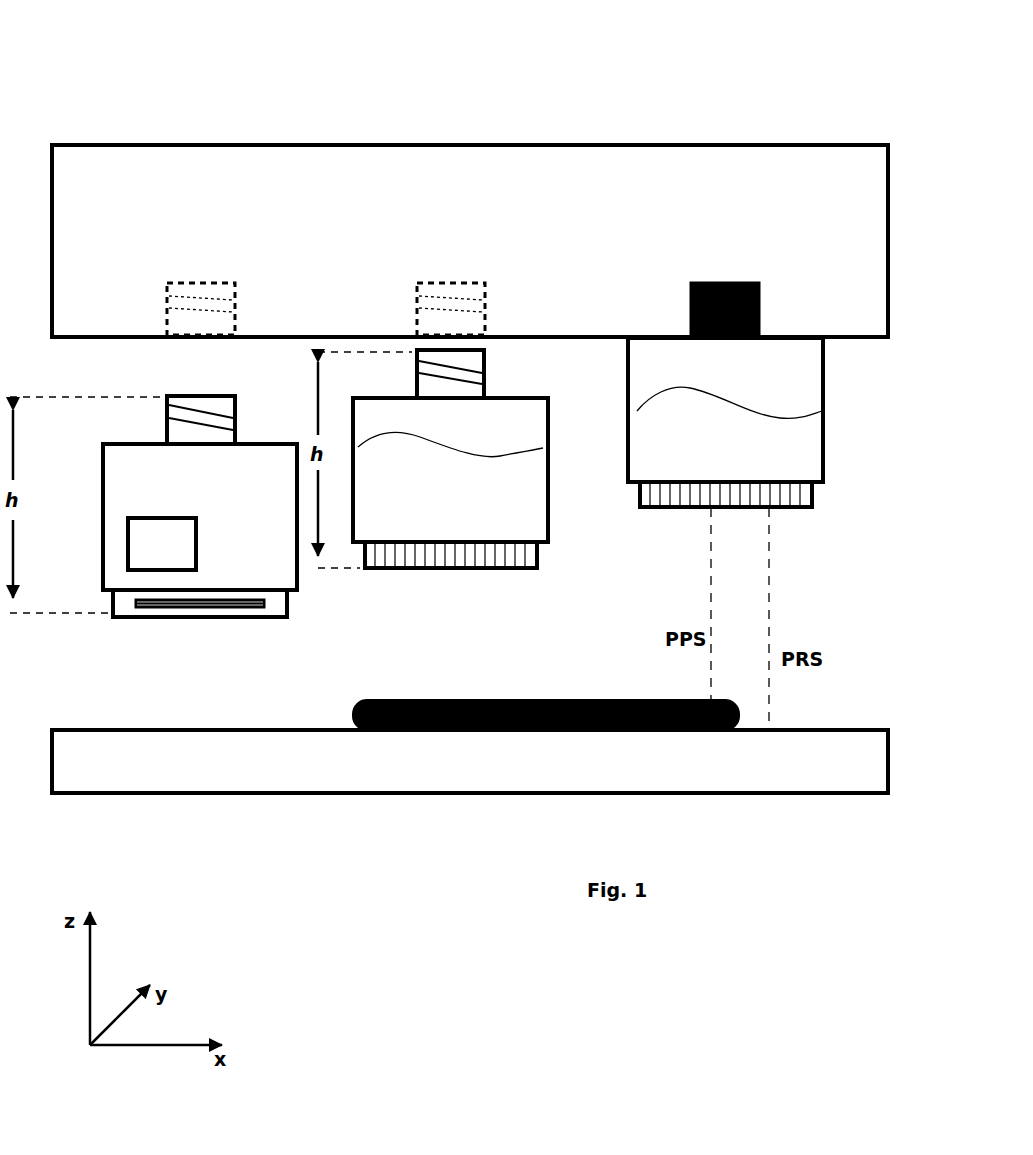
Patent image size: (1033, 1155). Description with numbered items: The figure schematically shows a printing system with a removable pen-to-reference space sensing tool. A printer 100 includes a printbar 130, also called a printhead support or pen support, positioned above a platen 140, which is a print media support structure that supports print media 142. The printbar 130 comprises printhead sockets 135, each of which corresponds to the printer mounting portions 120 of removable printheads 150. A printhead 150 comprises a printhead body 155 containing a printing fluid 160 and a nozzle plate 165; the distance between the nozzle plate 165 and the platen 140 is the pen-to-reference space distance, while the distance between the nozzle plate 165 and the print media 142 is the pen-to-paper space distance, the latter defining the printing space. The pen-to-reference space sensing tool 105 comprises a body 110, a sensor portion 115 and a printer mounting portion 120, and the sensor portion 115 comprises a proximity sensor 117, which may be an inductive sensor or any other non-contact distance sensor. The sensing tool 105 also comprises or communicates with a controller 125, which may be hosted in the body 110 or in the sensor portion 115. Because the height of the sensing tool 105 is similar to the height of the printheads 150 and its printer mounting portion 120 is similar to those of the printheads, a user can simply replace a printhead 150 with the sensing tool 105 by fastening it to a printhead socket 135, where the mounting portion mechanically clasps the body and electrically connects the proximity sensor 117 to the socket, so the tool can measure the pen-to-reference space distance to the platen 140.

The printer 100 is at (148, 72).
The printbar 130 is at (260, 144).
The printhead socket 135 is at (238, 292).
The PRS sensing tool 105 is at (96, 634).
The body 110 is at (102, 490).
The printer mounting portion 120 is at (238, 404).
The controller 125 is at (198, 524).
The sensor portion 115 is at (288, 600).
The proximity sensor 117 is at (150, 610).
The printhead 150 is at (484, 535).
The printhead body 155 is at (550, 466).
The printing fluid 160 is at (738, 402).
The nozzle plate 165 is at (468, 572).
The print media 142 is at (350, 696).
The platen 140 is at (308, 795).